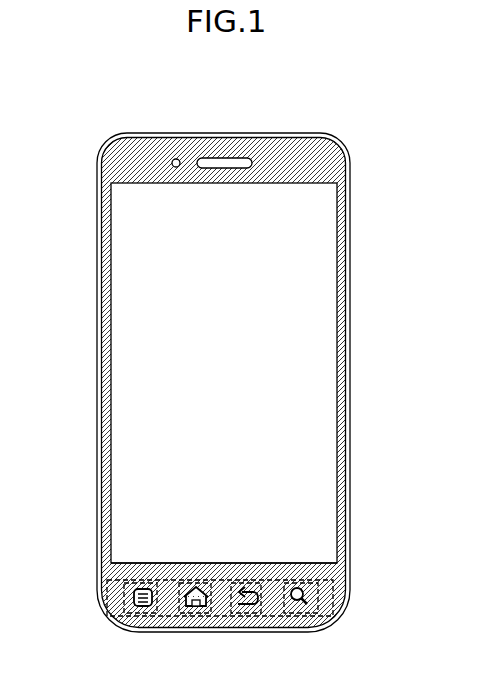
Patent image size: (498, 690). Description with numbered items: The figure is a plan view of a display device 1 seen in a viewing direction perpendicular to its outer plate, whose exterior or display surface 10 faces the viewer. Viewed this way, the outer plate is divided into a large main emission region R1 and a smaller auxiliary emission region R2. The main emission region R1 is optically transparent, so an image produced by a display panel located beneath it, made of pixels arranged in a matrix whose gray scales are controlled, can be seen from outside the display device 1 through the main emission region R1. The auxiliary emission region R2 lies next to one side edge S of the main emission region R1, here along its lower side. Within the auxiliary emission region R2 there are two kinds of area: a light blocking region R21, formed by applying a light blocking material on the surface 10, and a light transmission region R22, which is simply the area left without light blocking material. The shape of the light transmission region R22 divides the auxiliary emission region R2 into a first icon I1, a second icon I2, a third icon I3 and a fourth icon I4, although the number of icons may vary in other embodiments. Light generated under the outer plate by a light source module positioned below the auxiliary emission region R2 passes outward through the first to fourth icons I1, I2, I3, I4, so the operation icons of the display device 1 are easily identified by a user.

The display device 1 is at (279, 90).
The exterior surface 10 is at (350, 318).
The main emission region R1 is at (322, 393).
The auxiliary emission region R2 is at (319, 597).
The light blocking region R21 is at (124, 586).
The light transmission region R22 is at (118, 598).
The side edge S is at (304, 563).
The first icon I1 is at (147, 607).
The second icon I2 is at (199, 607).
The third icon I3 is at (251, 607).
The fourth icon I4 is at (303, 607).